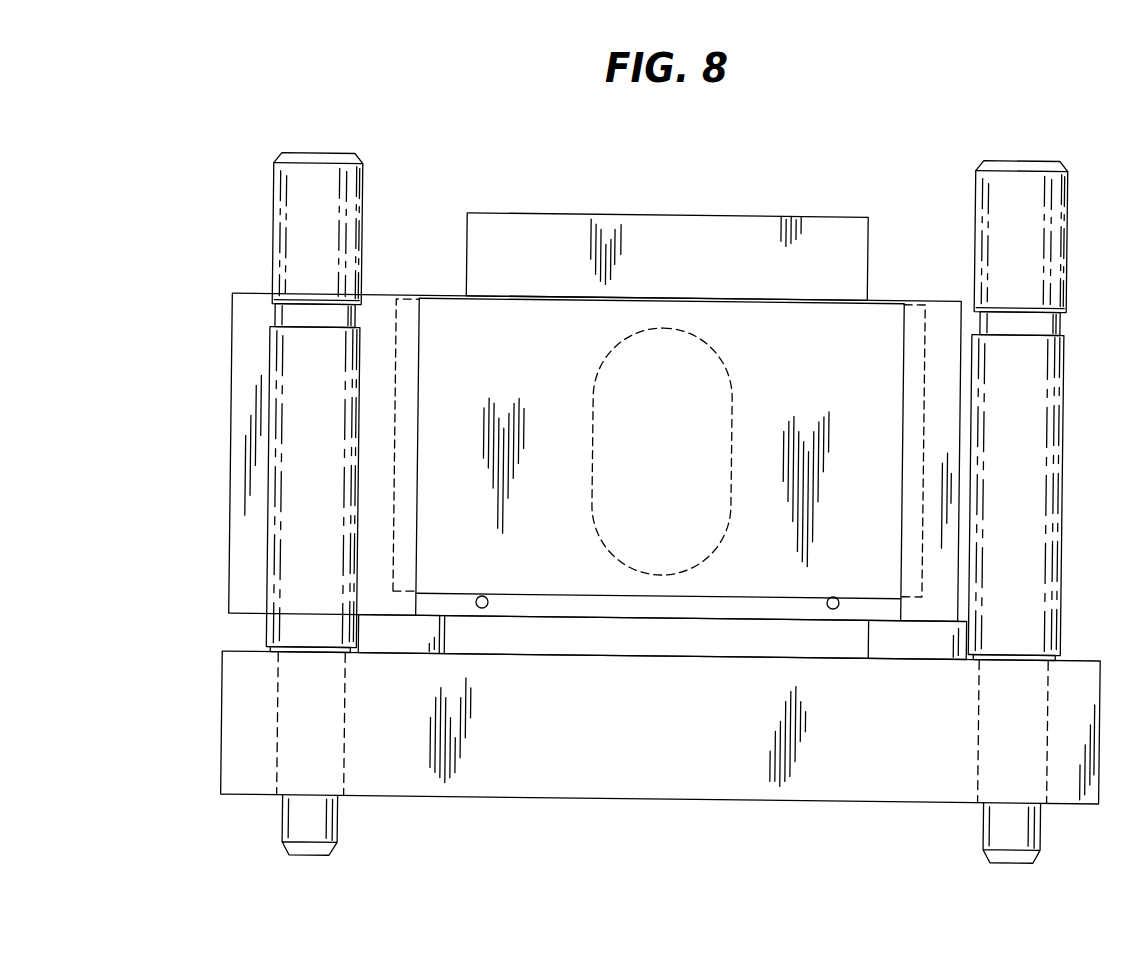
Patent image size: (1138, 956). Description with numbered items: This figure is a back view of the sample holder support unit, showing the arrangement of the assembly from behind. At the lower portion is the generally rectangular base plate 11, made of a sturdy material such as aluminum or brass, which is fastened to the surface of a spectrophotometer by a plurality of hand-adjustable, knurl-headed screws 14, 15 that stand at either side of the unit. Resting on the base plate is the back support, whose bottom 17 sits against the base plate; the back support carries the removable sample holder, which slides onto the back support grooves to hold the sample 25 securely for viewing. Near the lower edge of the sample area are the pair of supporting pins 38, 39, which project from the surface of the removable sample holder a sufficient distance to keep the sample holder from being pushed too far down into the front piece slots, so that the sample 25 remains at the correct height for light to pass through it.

The base plate 11 is at (1063, 707).
The hand-adjustable knurl-headed screw 14 is at (288, 222).
The hand-adjustable knurl-headed screw 15 is at (1043, 494).
The bottom 17 is at (665, 658).
The sample 25 is at (863, 357).
The supporting pin 38 is at (476, 602).
The supporting pin 39 is at (839, 606).